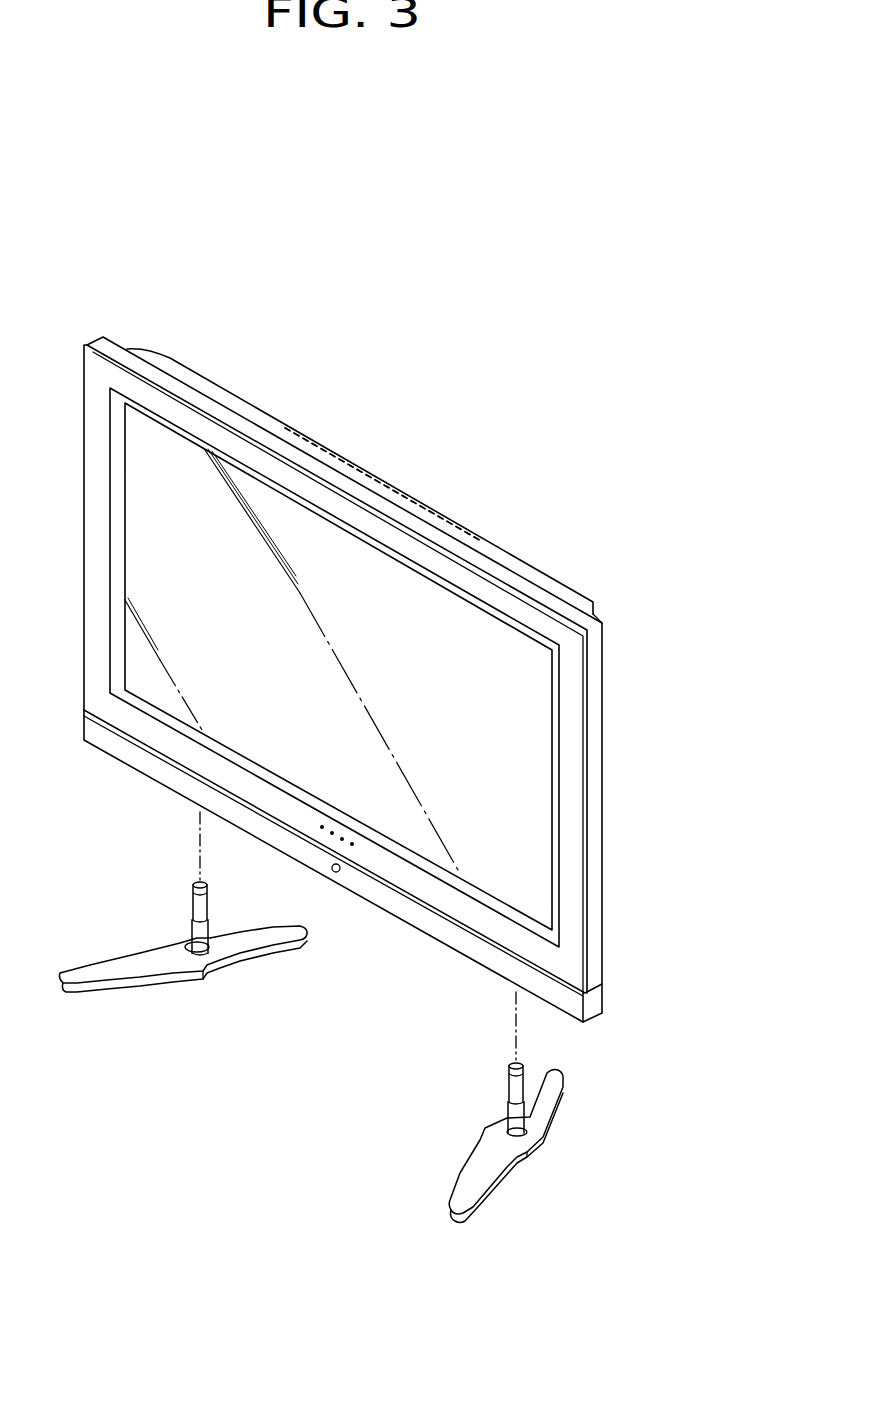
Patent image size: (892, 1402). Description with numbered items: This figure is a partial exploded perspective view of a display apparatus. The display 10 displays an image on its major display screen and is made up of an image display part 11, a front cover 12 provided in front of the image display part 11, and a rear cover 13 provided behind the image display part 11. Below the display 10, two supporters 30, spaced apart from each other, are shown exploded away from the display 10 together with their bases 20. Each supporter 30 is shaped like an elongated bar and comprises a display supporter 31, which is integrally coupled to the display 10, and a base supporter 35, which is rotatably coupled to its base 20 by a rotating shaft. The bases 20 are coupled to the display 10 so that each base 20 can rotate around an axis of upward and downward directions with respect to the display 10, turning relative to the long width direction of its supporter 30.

The display 10 is at (412, 679).
The image display part 11 is at (690, 660).
The front cover 12 is at (580, 725).
The rear cover 13 is at (602, 662).
The base 20 is at (88, 993).
The supporter 30 is at (381, 975).
The display supporter 31 is at (193, 892).
The base supporter 35 is at (193, 927).